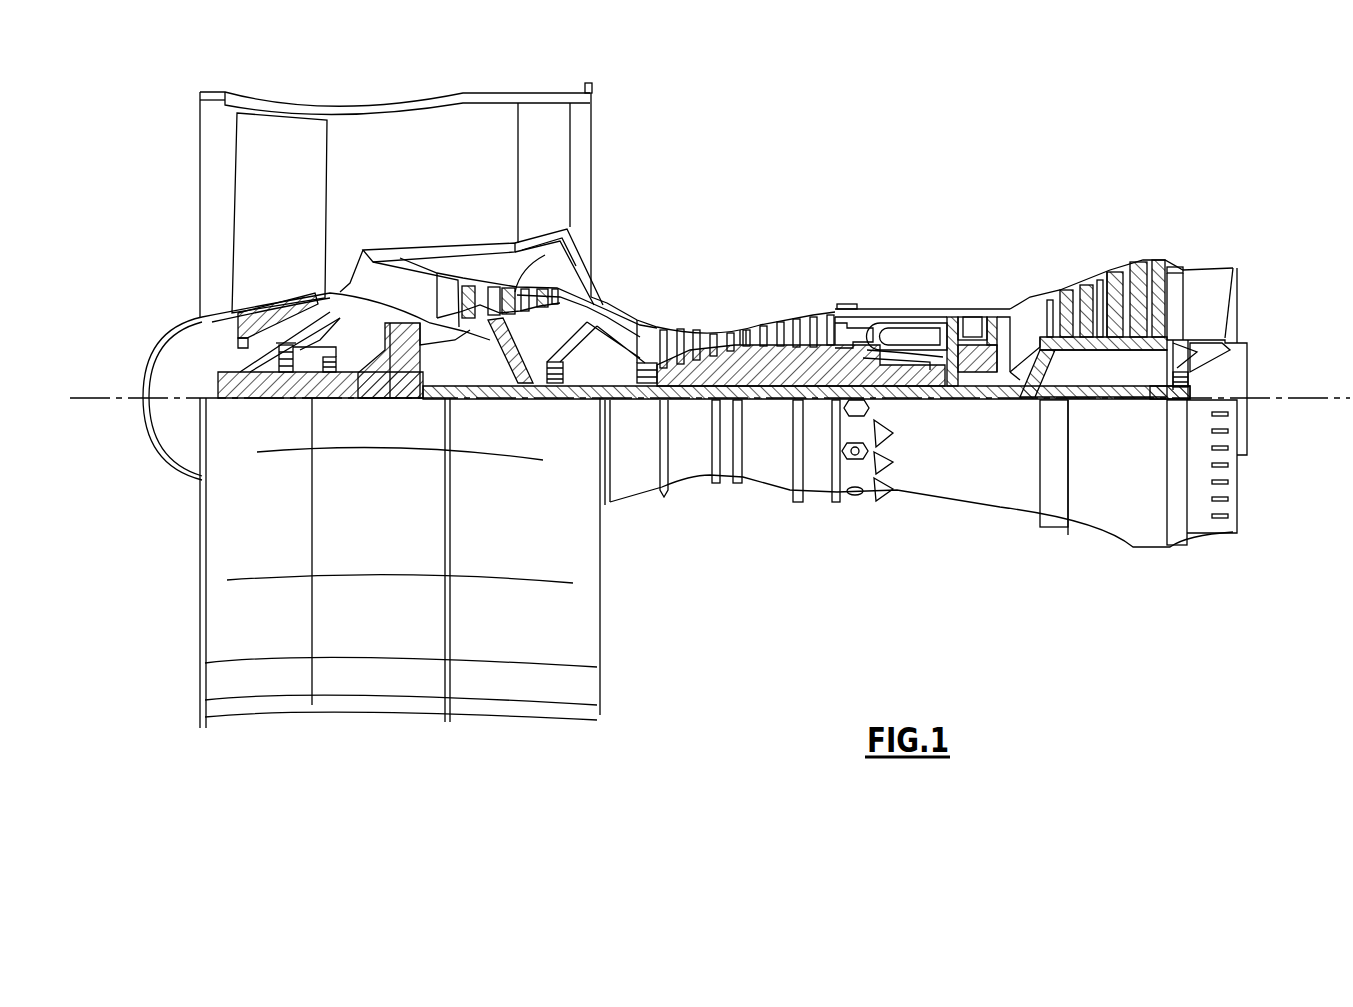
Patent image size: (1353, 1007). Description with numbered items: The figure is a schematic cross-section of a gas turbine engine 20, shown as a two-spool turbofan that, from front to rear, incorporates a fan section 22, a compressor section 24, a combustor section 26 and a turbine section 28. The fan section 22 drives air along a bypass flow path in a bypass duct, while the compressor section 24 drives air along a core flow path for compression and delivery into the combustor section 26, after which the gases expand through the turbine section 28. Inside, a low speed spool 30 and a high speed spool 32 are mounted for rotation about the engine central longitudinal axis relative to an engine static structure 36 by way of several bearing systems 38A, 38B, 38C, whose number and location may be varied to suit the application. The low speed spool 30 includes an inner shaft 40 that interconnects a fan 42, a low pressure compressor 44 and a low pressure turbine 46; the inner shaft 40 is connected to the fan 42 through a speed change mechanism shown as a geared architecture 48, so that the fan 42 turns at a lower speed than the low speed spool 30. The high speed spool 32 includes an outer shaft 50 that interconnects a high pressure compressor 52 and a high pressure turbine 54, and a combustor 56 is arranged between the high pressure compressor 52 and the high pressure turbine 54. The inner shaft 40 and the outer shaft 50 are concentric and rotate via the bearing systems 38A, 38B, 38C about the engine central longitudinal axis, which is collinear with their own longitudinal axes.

The gas turbine engine 20 is at (912, 138).
The fan section 22 is at (320, 88).
The compressor section 24 is at (653, 297).
The combustor section 26 is at (907, 252).
The turbine section 28 is at (1053, 230).
The low speed spool 30 is at (960, 398).
The high speed spool 32 is at (770, 362).
The engine static structure 36 is at (817, 496).
The bearing system 38A is at (287, 378).
The bearing system 38B is at (333, 378).
The bearing system 38C is at (550, 384).
The inner shaft 40 is at (628, 400).
The fan 42 is at (292, 230).
The low pressure compressor 44 is at (578, 243).
The low pressure turbine 46 is at (1110, 265).
The geared architecture 48 is at (410, 383).
The outer shaft 50 is at (893, 392).
The high pressure compressor 52 is at (747, 320).
The high pressure turbine 54 is at (970, 308).
The combustor 56 is at (908, 330).